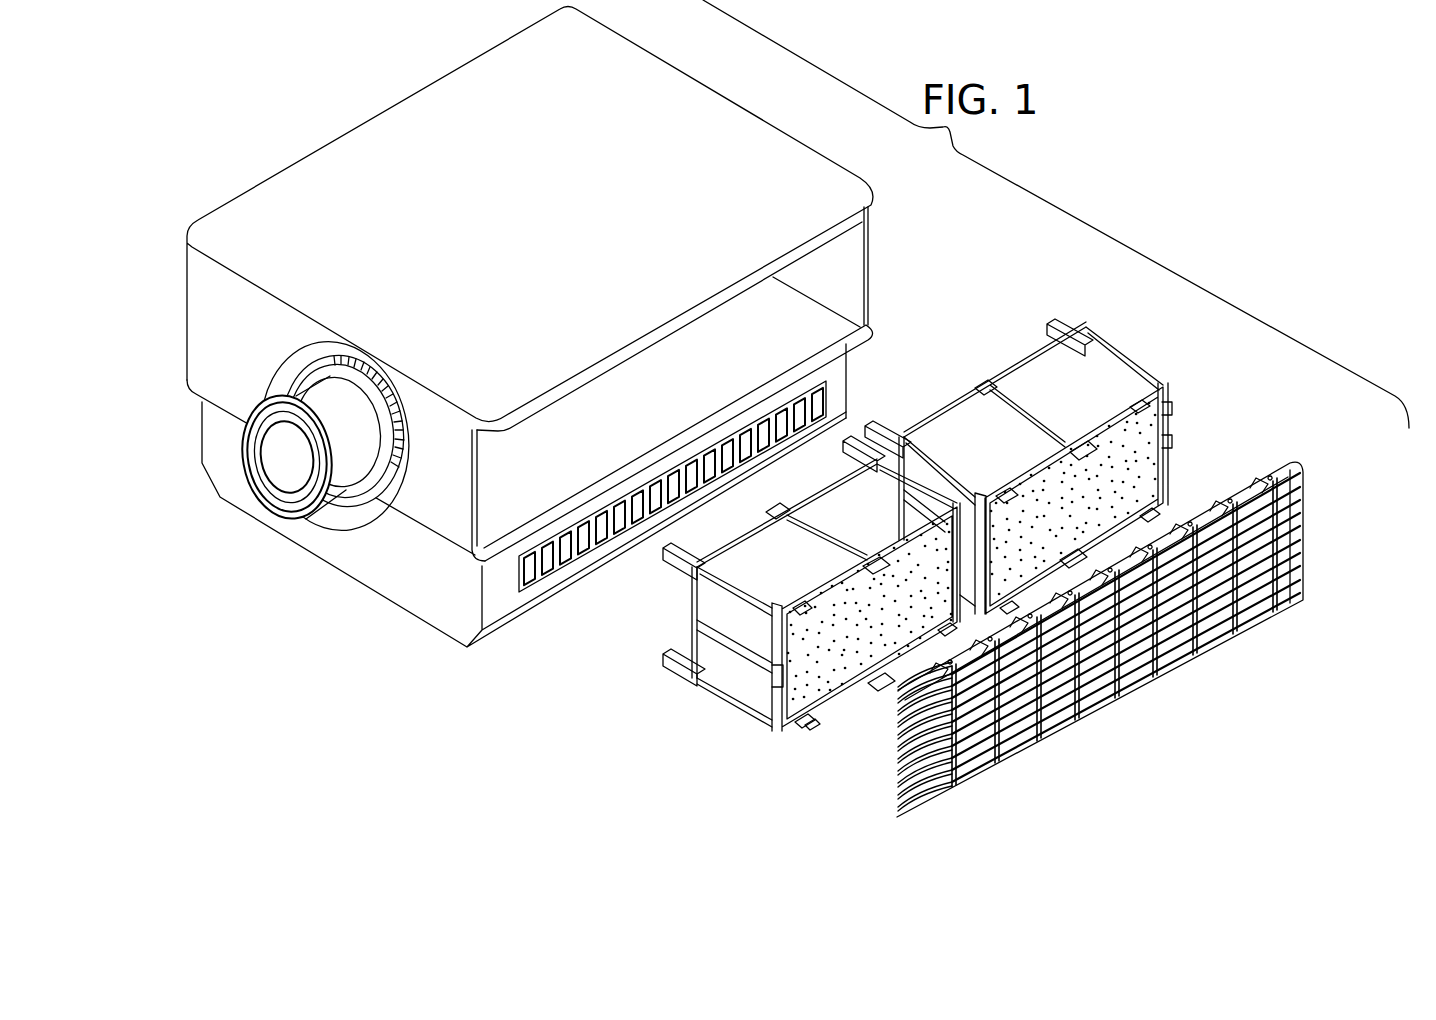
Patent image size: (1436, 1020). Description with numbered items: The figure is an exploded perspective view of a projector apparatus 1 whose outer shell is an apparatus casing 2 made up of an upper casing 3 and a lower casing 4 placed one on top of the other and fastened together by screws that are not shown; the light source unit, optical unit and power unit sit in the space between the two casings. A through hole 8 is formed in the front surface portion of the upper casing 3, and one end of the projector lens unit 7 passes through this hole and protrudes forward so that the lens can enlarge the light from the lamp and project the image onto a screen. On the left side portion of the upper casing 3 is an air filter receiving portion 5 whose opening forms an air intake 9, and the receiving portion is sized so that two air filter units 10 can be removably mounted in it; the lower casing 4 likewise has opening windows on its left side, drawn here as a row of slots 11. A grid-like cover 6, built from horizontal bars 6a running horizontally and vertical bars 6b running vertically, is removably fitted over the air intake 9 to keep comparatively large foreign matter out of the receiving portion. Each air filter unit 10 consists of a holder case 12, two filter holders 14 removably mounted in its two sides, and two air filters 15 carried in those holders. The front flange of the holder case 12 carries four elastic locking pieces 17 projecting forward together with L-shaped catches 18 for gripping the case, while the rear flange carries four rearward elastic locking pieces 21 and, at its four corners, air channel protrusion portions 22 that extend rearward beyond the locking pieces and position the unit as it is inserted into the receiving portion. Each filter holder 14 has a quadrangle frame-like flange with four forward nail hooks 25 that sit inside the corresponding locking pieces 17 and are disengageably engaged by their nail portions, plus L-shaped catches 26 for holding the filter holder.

The projector apparatus 1 is at (940, 228).
The apparatus casing 2 is at (143, 352).
The upper casing 3 is at (195, 368).
The lower casing 4 is at (205, 432).
The air filter receiving portion 5 is at (855, 281).
The grid-like cover 6 is at (1100, 639).
The horizontal bars 6a is at (1090, 675).
The vertical bars 6b is at (1275, 600).
The projector lens unit 7 is at (313, 535).
The through hole 8 is at (379, 512).
The air intake 9 is at (812, 326).
The air filter unit 10 is at (934, 540).
The intake opening 11 is at (565, 549).
The holder case 12 is at (690, 604).
The filter holder 14 is at (773, 729).
The air filter 15 is at (833, 672).
The locking piece 17 is at (814, 722).
The catch 18 is at (773, 677).
The locking piece 21 is at (705, 558).
The air channel protrusion portion 22 is at (677, 676).
The nail hook 25 is at (796, 724).
The catch 26 is at (884, 683).